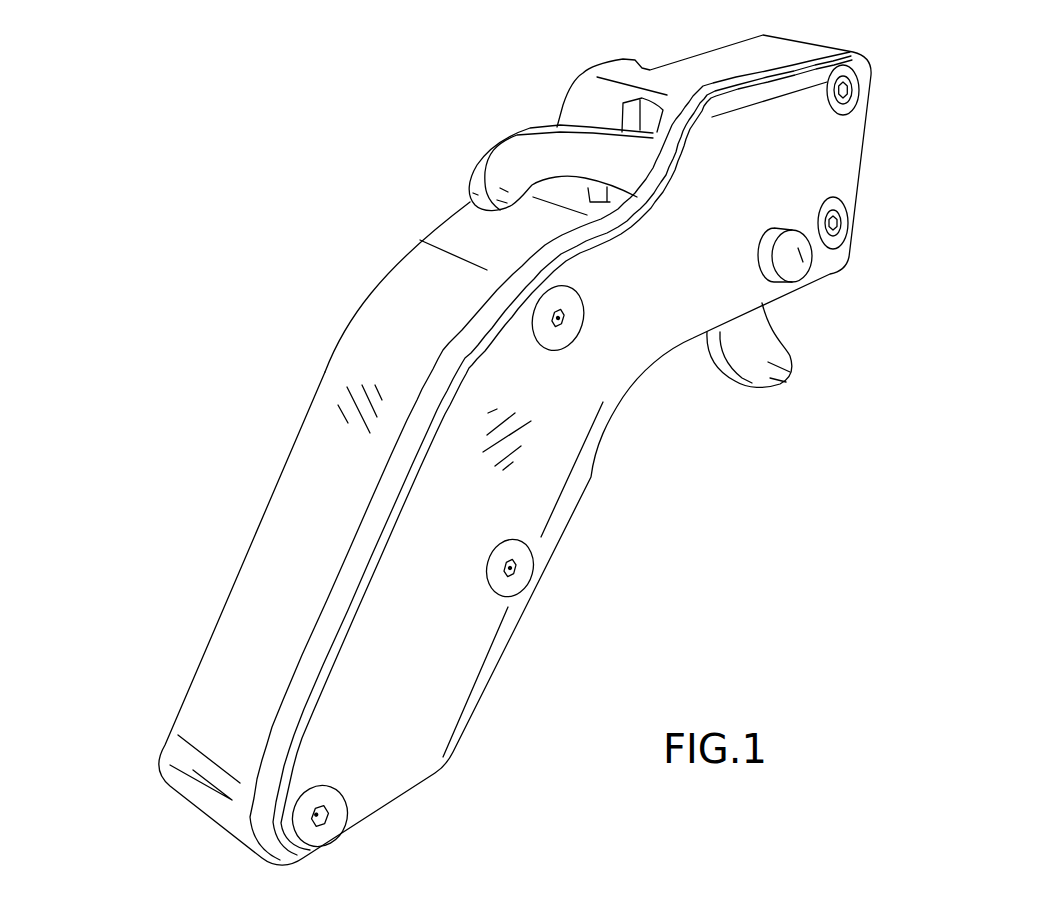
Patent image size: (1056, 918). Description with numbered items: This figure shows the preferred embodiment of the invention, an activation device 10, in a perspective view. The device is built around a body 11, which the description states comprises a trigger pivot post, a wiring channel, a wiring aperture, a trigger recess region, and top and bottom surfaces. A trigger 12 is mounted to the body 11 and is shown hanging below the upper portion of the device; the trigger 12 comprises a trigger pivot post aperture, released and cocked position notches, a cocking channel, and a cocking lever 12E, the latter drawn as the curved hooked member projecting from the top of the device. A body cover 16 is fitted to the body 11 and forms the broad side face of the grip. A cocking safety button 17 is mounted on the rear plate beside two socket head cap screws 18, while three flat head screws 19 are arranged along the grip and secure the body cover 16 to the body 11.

The activation device 10 is at (628, 567).
The body 11 is at (335, 439).
The trigger 12 is at (785, 370).
The cocking lever 12E is at (523, 157).
The body cover 16 is at (547, 443).
The cocking safety button 17 is at (793, 260).
The socket head cap screws 18 is at (827, 223).
The flat head screws 19 is at (310, 816).